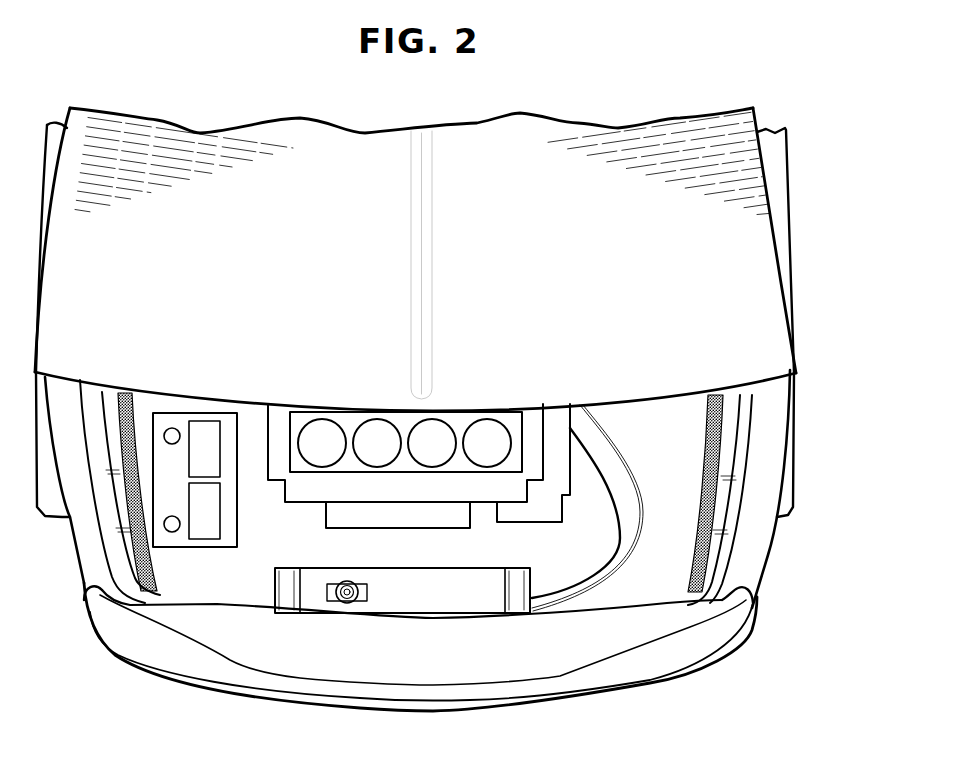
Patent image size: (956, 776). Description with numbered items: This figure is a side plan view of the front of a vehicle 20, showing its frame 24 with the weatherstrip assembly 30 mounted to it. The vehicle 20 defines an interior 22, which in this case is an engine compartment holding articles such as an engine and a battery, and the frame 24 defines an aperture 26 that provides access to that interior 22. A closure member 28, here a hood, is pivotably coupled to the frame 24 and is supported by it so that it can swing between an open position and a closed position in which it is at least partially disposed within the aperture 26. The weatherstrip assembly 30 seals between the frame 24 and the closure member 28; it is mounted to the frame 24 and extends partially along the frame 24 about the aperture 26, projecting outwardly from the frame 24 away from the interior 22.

The vehicle 20 is at (634, 100).
The interior 22 is at (215, 603).
The frame 24 is at (725, 513).
The aperture 26 is at (578, 606).
The closure member 28 is at (751, 238).
The weatherstrip assembly 30 is at (707, 452).